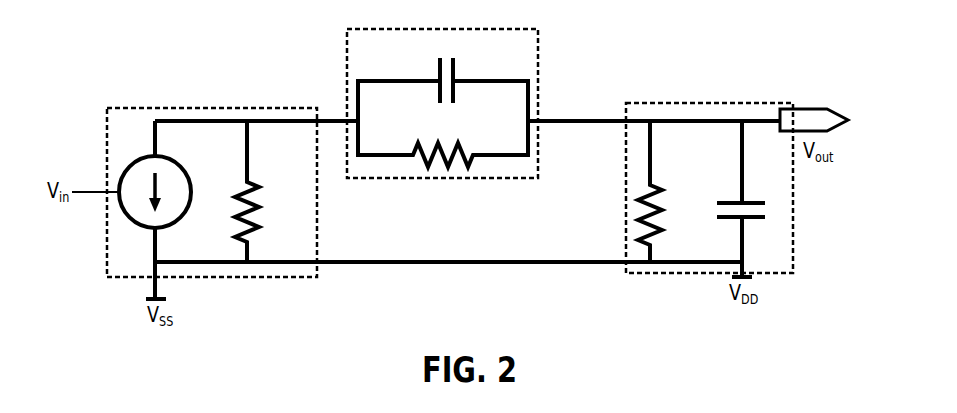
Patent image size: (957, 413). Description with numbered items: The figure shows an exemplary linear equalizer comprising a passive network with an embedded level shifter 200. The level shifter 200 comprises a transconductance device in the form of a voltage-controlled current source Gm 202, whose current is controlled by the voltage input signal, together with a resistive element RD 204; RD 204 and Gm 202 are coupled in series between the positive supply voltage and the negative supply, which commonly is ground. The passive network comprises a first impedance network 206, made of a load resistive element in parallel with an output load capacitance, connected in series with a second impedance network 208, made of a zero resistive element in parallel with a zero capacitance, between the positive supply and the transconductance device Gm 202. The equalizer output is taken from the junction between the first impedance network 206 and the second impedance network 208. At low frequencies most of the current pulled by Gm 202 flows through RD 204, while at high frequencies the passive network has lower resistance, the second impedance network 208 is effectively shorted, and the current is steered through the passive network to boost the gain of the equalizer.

The level shifter 200 is at (212, 180).
The voltage-controlled current source Gm 202 is at (174, 192).
The resistive element RD 204 is at (271, 191).
The first impedance network 206 is at (709, 178).
The second impedance network 208 is at (442, 89).